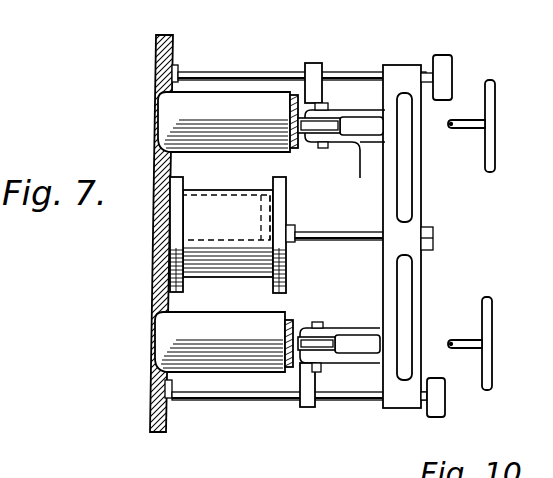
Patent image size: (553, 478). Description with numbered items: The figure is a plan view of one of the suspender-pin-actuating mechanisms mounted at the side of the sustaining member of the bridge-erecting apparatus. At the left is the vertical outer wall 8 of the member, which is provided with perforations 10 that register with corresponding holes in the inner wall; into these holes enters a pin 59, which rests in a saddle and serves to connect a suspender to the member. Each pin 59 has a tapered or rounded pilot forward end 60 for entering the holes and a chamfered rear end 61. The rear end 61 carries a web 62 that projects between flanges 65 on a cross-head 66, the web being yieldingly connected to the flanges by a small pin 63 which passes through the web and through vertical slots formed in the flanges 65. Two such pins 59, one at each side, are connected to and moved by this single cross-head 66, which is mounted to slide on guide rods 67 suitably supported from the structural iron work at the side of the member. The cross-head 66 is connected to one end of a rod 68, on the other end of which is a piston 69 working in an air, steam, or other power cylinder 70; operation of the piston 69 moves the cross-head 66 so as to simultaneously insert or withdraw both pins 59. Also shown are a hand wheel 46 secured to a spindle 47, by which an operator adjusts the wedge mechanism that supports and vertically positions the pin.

The vertical outer wall 8 is at (151, 419).
The registering perforations 10 is at (150, 370).
The hand wheel 46 is at (493, 148).
The spindle 47 is at (465, 129).
The pin 59 is at (226, 232).
The pilot forward end 60 is at (168, 116).
The chamfered rear end 61 is at (300, 142).
The web 62 is at (324, 339).
The pin 63 is at (321, 148).
The flanges 65 is at (362, 137).
The cross-head 66 is at (417, 288).
The guide rods 67 is at (233, 72).
The rod 68 is at (358, 241).
The piston 69 is at (266, 238).
The power cylinder 70 is at (199, 235).